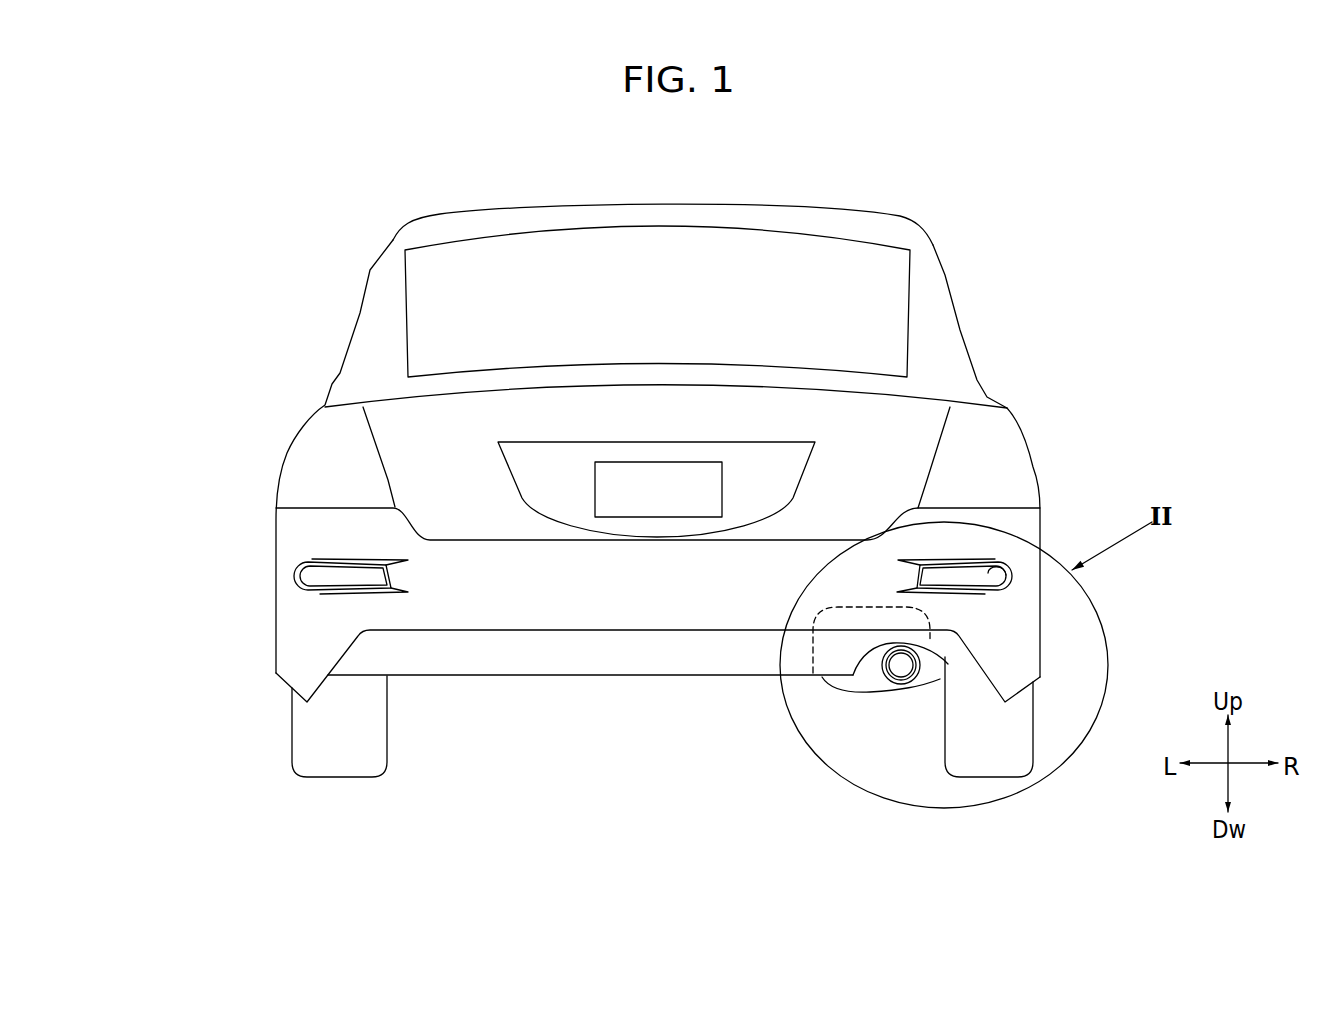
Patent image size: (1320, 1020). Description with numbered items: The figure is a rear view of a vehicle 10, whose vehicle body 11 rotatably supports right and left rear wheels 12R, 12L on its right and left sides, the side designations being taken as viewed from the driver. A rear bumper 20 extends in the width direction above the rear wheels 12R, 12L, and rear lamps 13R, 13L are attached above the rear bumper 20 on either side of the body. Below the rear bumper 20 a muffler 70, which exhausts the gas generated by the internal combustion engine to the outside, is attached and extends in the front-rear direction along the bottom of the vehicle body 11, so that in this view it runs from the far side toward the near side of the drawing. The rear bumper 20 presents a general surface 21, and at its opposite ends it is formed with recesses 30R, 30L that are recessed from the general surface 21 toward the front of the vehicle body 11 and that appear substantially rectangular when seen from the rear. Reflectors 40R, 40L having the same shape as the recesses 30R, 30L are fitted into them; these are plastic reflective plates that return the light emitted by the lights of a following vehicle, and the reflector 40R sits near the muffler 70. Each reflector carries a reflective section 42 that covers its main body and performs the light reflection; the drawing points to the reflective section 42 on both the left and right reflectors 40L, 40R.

The vehicle 10 is at (262, 192).
The vehicle body 11 is at (455, 213).
The left rear lamp 13L is at (333, 437).
The right rear lamp 13R is at (978, 437).
The rear bumper 20 is at (276, 597).
The general surface 21 is at (307, 520).
The left recess 30L is at (326, 582).
The right recess 30R is at (970, 580).
The left reflector 40L is at (378, 596).
The right reflector 40R is at (955, 558).
The reflective section 42 is at (349, 570).
The left rear wheel 12L is at (290, 722).
The right rear wheel 12R is at (937, 735).
The muffler 70 is at (826, 684).